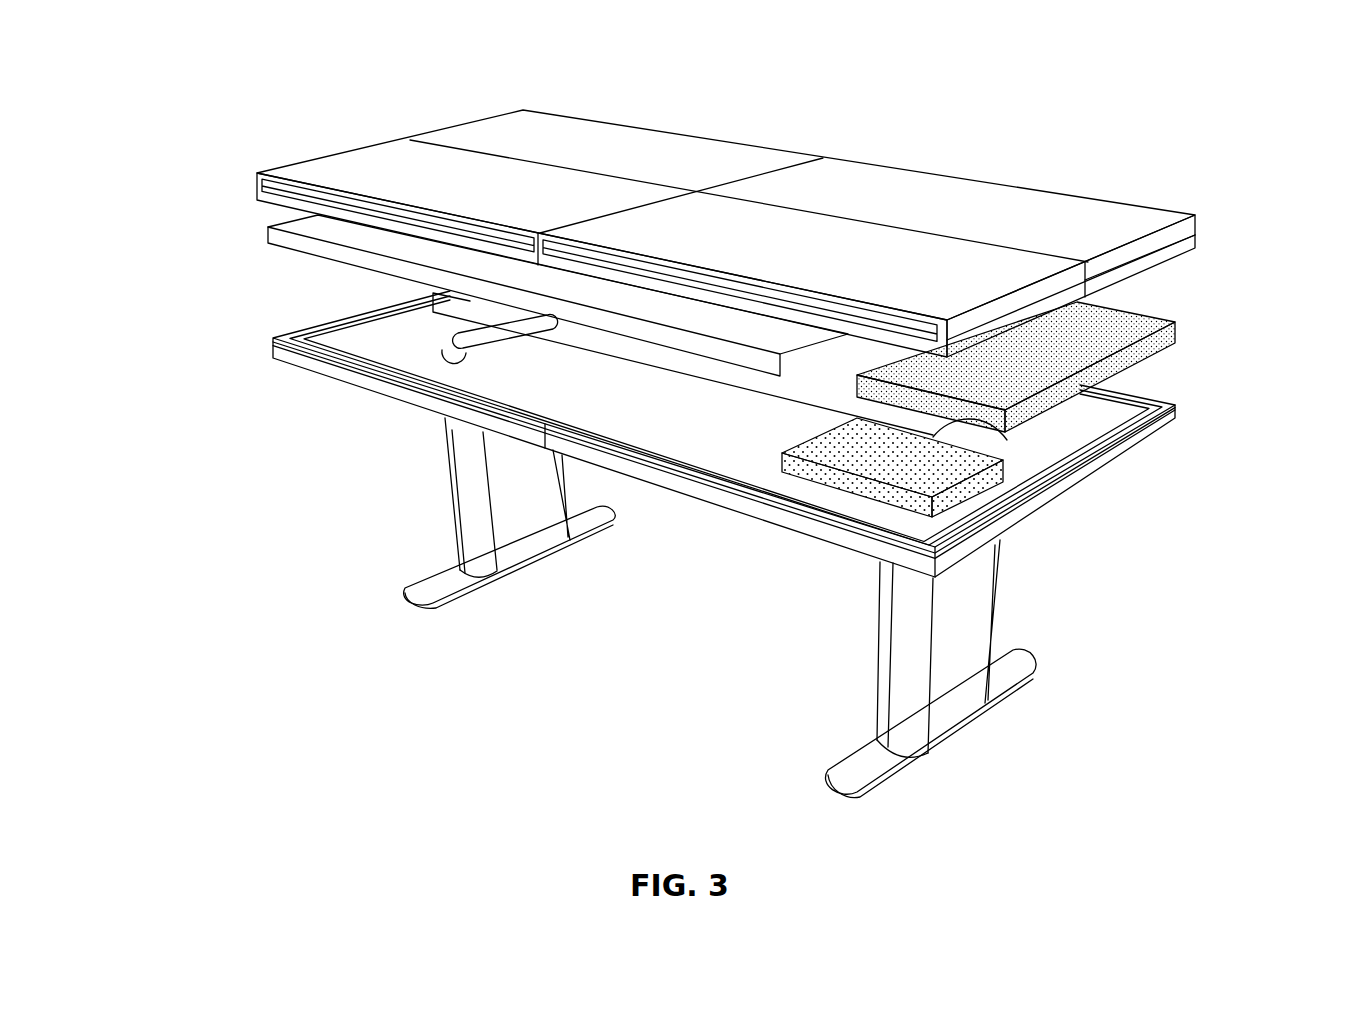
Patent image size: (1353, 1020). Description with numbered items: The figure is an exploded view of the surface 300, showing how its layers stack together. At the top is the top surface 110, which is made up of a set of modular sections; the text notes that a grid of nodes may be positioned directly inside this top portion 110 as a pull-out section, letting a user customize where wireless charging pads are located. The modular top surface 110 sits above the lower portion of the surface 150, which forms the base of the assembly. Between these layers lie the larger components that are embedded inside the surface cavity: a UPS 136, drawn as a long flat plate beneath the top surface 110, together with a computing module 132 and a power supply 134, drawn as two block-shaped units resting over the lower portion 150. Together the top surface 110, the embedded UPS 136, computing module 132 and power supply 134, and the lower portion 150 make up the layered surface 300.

The surface 300 is at (218, 74).
The top surface 110 is at (1097, 212).
The UPS 136 is at (268, 233).
The power supply 134 is at (1142, 322).
The lower portion of the surface 150 is at (1177, 417).
The computing module 132 is at (968, 487).